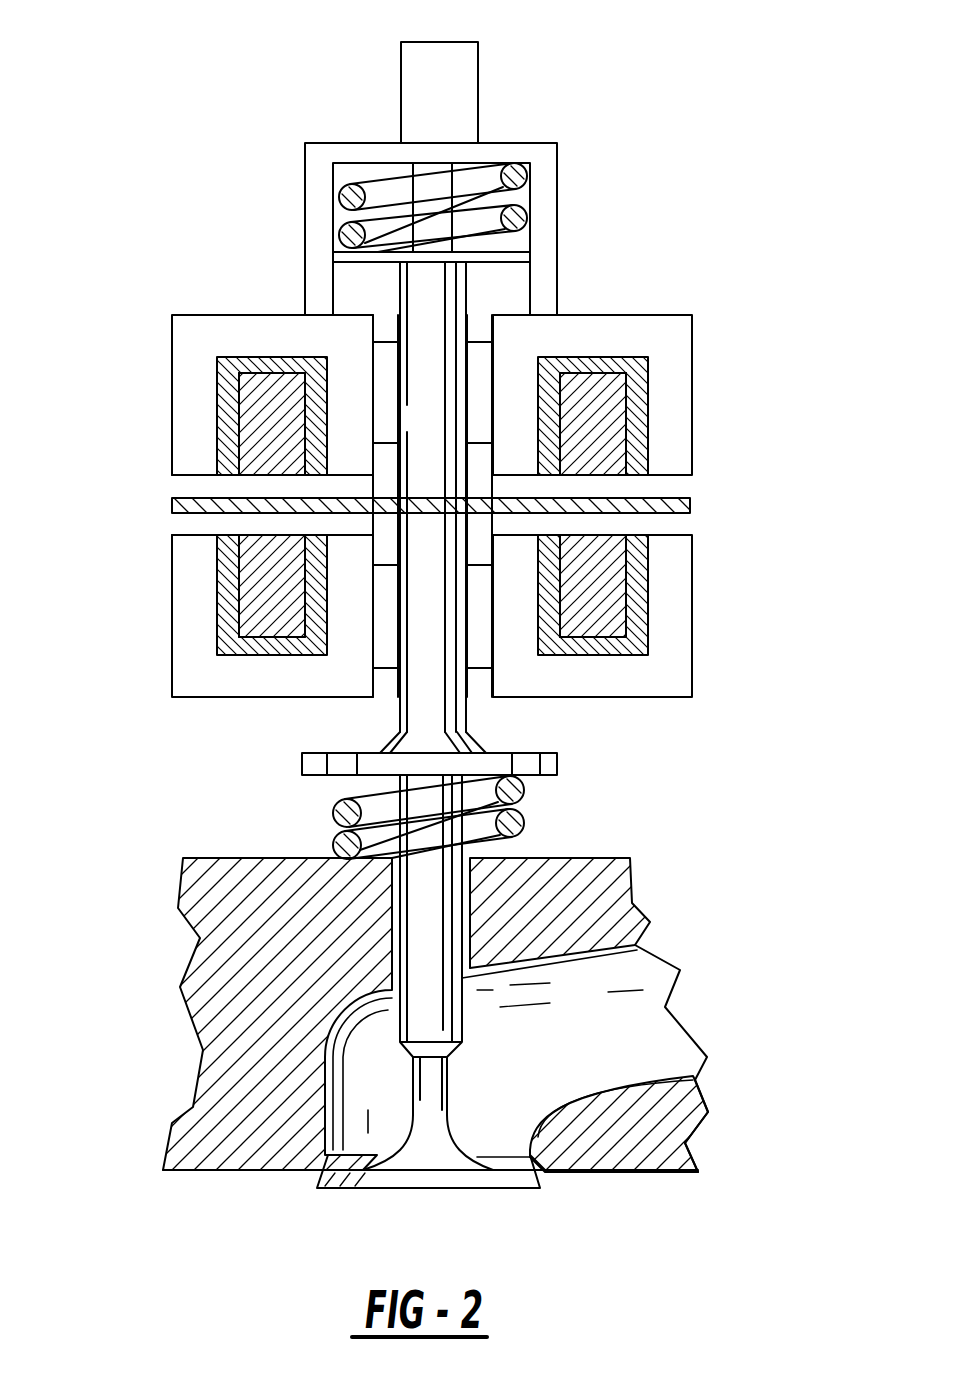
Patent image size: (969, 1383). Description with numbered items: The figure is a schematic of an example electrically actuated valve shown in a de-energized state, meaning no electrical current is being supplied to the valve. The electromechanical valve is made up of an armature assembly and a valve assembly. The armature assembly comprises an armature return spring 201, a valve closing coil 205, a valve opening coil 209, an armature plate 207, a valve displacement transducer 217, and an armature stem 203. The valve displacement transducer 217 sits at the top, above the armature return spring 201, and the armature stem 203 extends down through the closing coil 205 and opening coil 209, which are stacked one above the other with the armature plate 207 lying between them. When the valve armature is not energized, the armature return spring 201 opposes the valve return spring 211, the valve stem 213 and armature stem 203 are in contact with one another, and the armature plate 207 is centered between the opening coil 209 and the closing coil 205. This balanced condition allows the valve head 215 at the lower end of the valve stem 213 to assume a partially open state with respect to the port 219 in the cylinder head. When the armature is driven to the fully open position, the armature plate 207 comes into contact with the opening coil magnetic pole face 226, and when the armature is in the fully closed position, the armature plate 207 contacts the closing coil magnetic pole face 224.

The armature return spring 201 is at (525, 212).
The armature stem 203 is at (397, 287).
The valve closing coil 205 is at (645, 405).
The armature plate 207 is at (692, 503).
The valve opening coil 209 is at (645, 598).
The valve return spring 211 is at (513, 820).
The valve stem 213 is at (422, 915).
The valve head 215 is at (507, 1187).
The valve displacement transducer 217 is at (478, 92).
The port 219 is at (508, 1117).
The closing coil magnetic pole face 224 is at (265, 476).
The opening coil magnetic pole face 226 is at (270, 534).